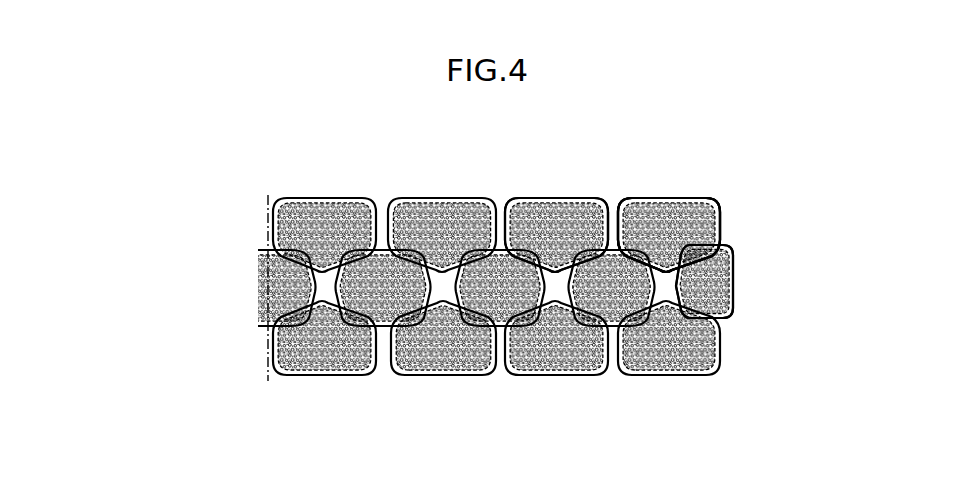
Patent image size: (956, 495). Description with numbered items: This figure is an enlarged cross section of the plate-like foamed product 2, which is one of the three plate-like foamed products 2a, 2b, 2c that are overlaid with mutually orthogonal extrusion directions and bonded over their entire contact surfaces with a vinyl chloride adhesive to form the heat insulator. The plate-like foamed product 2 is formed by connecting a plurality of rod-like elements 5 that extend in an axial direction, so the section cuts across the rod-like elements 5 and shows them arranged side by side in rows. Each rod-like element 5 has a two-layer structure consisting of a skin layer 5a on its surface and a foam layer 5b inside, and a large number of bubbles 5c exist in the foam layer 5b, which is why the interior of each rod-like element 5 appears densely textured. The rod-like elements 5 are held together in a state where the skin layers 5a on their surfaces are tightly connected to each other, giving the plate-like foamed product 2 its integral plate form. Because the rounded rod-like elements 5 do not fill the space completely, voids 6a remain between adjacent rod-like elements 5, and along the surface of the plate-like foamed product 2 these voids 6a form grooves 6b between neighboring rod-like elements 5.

The plate-like foamed product 2 is at (322, 150).
The plate-like foamed product 2a is at (444, 186).
The plate-like foamed product 2b is at (465, 213).
The plate-like foamed product 2c is at (472, 237).
The rod-like element 5 is at (547, 190).
The skin layer 5a is at (683, 190).
The foam layer 5b is at (703, 213).
The bubbles 5c is at (637, 188).
The voids 6a is at (667, 275).
The grooves 6b is at (603, 193).